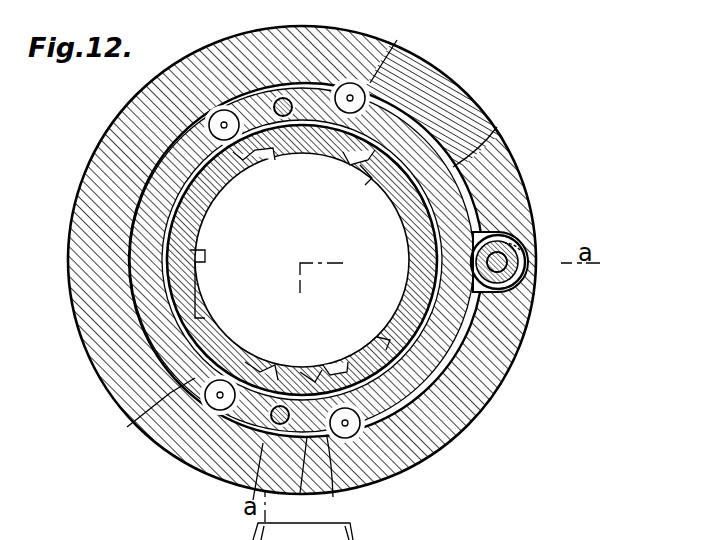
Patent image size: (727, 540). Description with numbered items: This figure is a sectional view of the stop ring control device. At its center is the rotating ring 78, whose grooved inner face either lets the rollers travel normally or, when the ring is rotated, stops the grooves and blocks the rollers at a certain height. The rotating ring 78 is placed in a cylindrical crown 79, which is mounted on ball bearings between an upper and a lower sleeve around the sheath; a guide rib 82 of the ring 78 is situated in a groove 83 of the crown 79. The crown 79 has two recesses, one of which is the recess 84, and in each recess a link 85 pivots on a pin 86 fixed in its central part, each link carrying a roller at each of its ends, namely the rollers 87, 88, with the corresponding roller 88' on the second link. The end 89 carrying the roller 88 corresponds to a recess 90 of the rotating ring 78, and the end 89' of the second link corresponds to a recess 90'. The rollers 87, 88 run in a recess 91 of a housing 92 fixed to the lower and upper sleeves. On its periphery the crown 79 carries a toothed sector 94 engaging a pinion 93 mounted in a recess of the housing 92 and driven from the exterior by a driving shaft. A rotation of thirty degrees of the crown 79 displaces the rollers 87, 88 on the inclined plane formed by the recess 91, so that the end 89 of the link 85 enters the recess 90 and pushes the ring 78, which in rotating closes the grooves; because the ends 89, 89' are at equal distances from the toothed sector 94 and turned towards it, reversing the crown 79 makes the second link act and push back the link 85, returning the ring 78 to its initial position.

The rotating ring 78 is at (410, 263).
The cylindrical crown 79 is at (151, 409).
The guide rib 82 is at (208, 324).
The groove 83 is at (196, 252).
The recess 84 is at (214, 378).
The link 85 is at (300, 472).
The pin 86 is at (252, 478).
The roller 87 is at (262, 370).
The roller 88 is at (340, 358).
The roller 88' is at (400, 57).
The end 89 is at (311, 365).
The end 89' is at (349, 169).
The recess 90 is at (329, 261).
The recess 90' is at (365, 186).
The recess 91 is at (336, 486).
The housing 92 is at (473, 403).
The pinion 93 is at (527, 271).
The toothed sector 94 is at (487, 142).